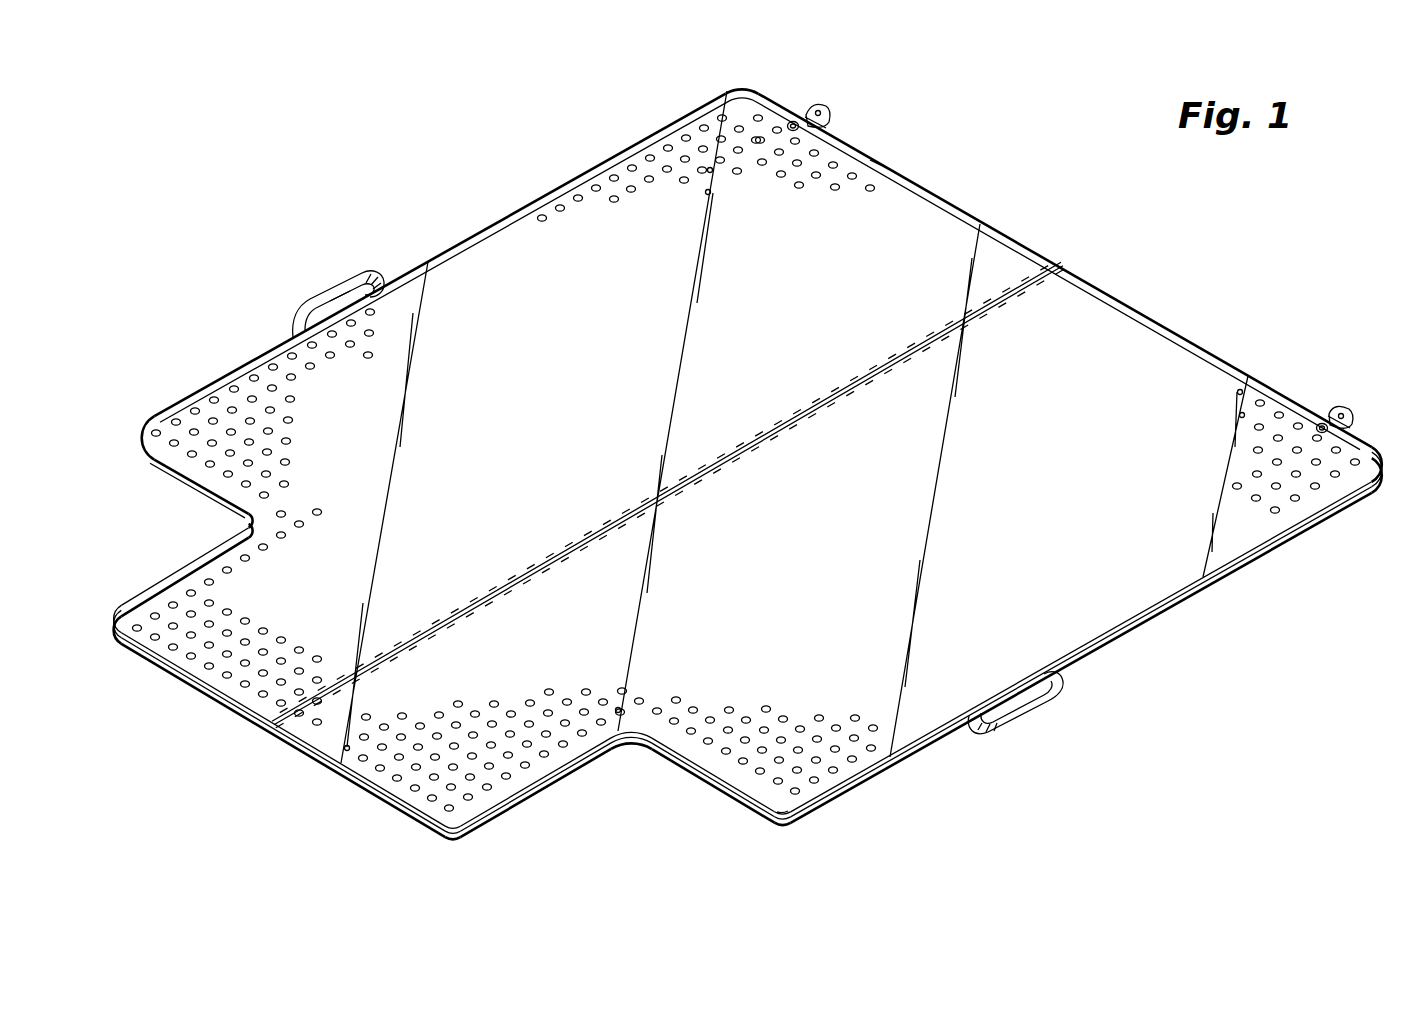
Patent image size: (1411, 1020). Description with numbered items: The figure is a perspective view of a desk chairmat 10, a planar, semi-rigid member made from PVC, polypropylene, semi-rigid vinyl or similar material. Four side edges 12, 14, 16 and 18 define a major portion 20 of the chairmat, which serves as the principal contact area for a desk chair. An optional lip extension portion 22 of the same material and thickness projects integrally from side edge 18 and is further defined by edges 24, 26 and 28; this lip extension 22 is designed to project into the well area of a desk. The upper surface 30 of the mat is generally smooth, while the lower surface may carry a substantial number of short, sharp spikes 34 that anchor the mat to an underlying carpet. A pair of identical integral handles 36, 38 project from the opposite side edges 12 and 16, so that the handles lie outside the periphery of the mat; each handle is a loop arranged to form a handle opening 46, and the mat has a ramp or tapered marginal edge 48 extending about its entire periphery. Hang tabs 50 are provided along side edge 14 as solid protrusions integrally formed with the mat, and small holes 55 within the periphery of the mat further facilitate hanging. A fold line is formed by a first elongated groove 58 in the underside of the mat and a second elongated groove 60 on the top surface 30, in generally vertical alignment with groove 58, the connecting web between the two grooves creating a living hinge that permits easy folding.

The desk chairmat 10 is at (566, 125).
The side edge 12 is at (480, 230).
The side edge 14 is at (947, 198).
The side edge 16 is at (1133, 628).
The side edge 18 is at (700, 767).
The major portion 20 is at (688, 559).
The lip extension portion 22 is at (261, 627).
The edge 24 is at (152, 589).
The edge 26 is at (190, 690).
The edge 28 is at (545, 788).
The upper surface 30 is at (1110, 315).
The spikes 34 is at (616, 204).
The handle 36 is at (318, 292).
The handle 38 is at (1040, 707).
The handle opening 46 is at (347, 287).
The tapered marginal edge 48 is at (882, 164).
The hang tab 50 is at (1344, 407).
The small hole 55 is at (795, 118).
The first elongated groove 58 is at (718, 478).
The second elongated groove 60 is at (733, 452).